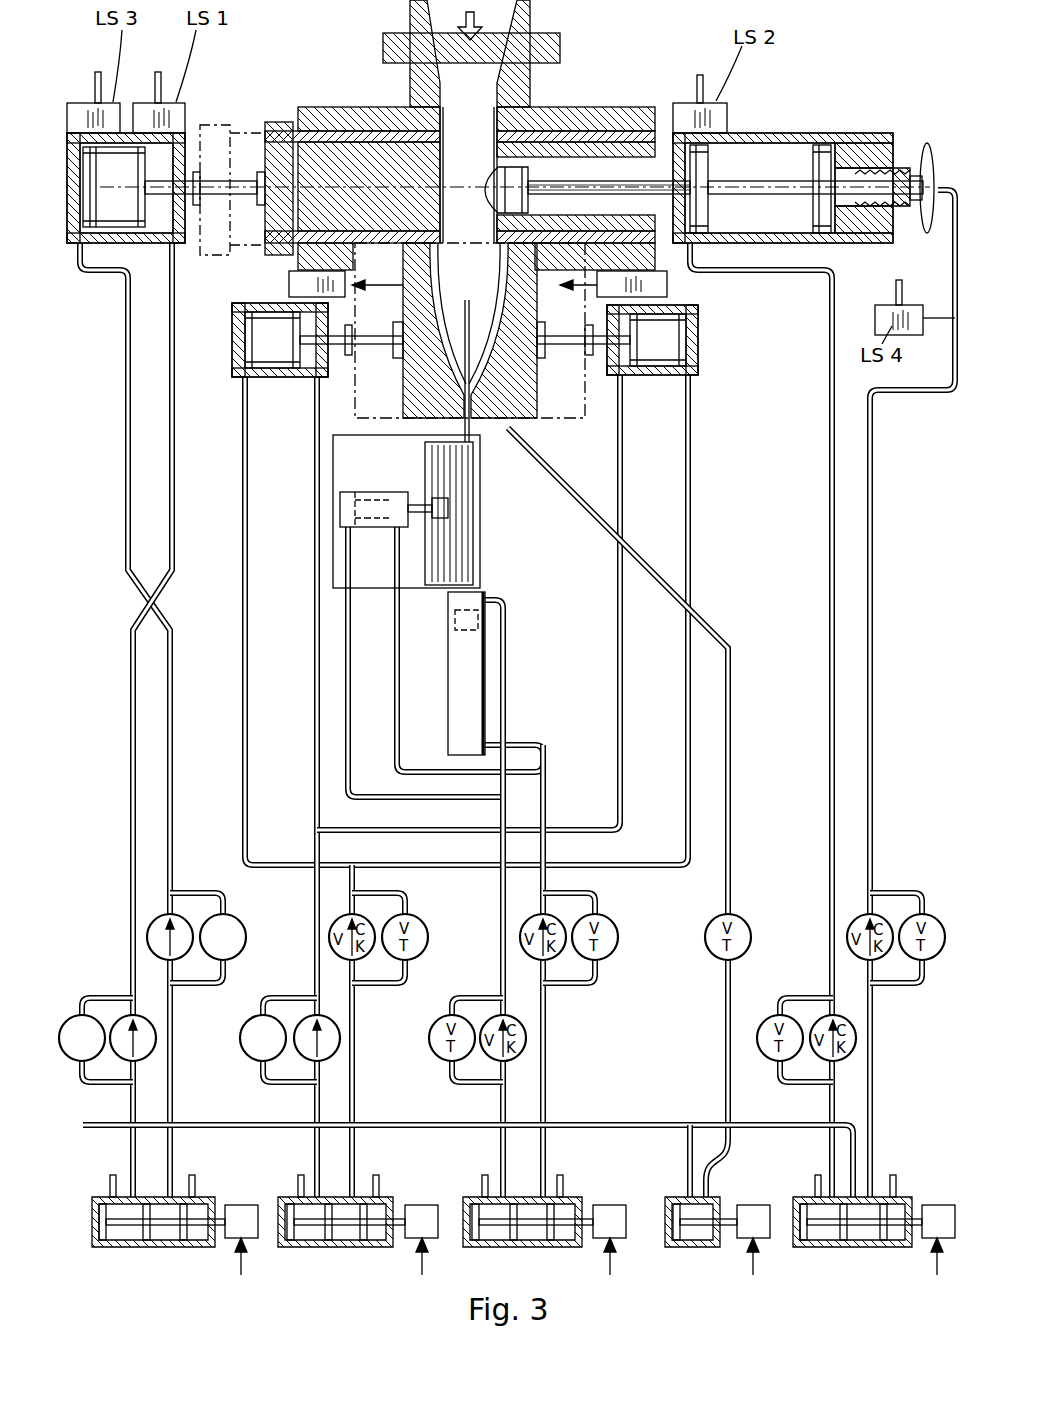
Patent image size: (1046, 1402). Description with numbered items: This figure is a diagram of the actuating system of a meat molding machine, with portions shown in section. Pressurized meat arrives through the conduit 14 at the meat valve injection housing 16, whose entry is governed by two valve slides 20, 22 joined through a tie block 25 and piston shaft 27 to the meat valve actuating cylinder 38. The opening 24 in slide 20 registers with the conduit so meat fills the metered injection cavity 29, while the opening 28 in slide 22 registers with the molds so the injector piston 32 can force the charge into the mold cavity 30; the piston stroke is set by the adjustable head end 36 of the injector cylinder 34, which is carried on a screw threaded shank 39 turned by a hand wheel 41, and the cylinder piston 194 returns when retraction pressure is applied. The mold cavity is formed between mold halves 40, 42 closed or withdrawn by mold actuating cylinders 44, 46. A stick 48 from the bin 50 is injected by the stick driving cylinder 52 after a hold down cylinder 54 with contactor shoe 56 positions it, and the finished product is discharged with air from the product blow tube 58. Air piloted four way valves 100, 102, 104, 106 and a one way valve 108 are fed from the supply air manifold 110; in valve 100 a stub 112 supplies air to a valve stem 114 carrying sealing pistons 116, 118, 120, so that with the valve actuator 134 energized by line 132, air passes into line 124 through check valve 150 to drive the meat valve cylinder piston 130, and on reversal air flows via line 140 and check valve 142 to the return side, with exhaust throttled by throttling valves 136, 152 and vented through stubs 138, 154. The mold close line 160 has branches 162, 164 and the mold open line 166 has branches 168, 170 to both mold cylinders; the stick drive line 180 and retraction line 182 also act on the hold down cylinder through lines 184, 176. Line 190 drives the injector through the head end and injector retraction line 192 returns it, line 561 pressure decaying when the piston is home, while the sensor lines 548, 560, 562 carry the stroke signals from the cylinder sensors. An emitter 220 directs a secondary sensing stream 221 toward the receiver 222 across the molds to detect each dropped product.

The conduit 14 is at (530, 16).
The meat valve injection housing 16 is at (585, 108).
The valve slide 20 is at (350, 130).
The valve slide 22 is at (395, 245).
The opening 24 is at (533, 132).
The tie block 25 is at (281, 121).
The piston shaft 27 is at (247, 180).
The opening 28 is at (468, 240).
The metered injection cavity 29 is at (478, 222).
The mold cavity 30 is at (497, 274).
The injector piston 32 is at (520, 180).
The injector cylinder 34 is at (798, 160).
The adjustable head end 36 is at (847, 150).
The meat valve actuating cylinder 38 is at (162, 162).
The screw threaded shank 39 is at (908, 170).
The mold half 40 is at (410, 366).
The hand wheel 41 is at (927, 143).
The mold half 42 is at (525, 368).
The mold actuating cylinder 44 is at (234, 352).
The mold actuating cylinder 46 is at (700, 345).
The stick 48 is at (458, 462).
The bin 50 is at (414, 588).
The stick driving cylinder 52 is at (485, 642).
The hold down cylinder 54 is at (392, 492).
The contactor shoe 56 is at (450, 508).
The product blow tube 58 is at (525, 430).
The air piloted four way valve 100 is at (177, 1225).
The air piloted four way valve 102 is at (380, 1200).
The air piloted four way valve 104 is at (570, 1200).
The air piloted four way valve 106 is at (895, 1200).
The one way air piloted valve 108 is at (718, 1198).
The supply air manifold 110 is at (238, 1125).
The stub 112 is at (152, 1166).
The valve stem 114 is at (188, 1228).
The sealing piston 116 is at (96, 1240).
The sealing piston 118 is at (143, 1237).
The sealing piston 120 is at (183, 1234).
The line 124 is at (175, 722).
The meat valve cylinder piston 130 is at (160, 213).
The line 132 is at (244, 1262).
The valve actuator 134 is at (236, 1210).
The throttling valve 136 is at (232, 918).
The vent stub 138 is at (193, 1184).
The line 140 is at (129, 666).
The check valve 142 is at (125, 1020).
The check valve 150 is at (174, 900).
The throttling valve 152 is at (78, 1062).
The exhaust stub 154 is at (110, 1176).
The mold close line 160 is at (355, 1062).
The branch 162 is at (248, 690).
The branch 164 is at (688, 655).
The mold open line 166 is at (314, 925).
The branch 168 is at (317, 562).
The branch 170 is at (622, 735).
The line 176 is at (350, 744).
The stick drive line 180 is at (545, 1068).
The stick drive retraction line 182 is at (503, 920).
The line 184 is at (400, 752).
The line 190 is at (873, 507).
The injector retraction line 192 is at (832, 500).
The piston 194 is at (813, 196).
The emitter 220 is at (667, 284).
The secondary sensing stream 221 is at (544, 290).
The receiver 222 is at (289, 283).
The line 548 is at (158, 80).
The line 560 is at (700, 78).
The line 561 is at (897, 286).
The limit switch actuator 562 is at (95, 80).